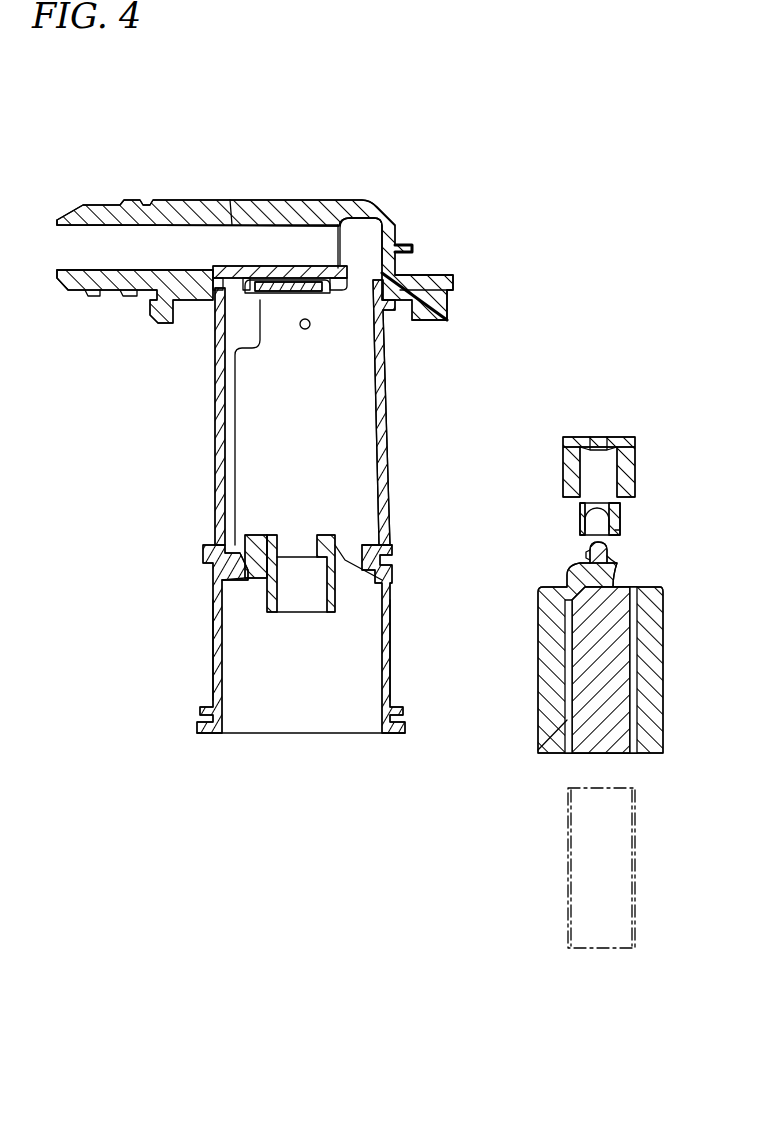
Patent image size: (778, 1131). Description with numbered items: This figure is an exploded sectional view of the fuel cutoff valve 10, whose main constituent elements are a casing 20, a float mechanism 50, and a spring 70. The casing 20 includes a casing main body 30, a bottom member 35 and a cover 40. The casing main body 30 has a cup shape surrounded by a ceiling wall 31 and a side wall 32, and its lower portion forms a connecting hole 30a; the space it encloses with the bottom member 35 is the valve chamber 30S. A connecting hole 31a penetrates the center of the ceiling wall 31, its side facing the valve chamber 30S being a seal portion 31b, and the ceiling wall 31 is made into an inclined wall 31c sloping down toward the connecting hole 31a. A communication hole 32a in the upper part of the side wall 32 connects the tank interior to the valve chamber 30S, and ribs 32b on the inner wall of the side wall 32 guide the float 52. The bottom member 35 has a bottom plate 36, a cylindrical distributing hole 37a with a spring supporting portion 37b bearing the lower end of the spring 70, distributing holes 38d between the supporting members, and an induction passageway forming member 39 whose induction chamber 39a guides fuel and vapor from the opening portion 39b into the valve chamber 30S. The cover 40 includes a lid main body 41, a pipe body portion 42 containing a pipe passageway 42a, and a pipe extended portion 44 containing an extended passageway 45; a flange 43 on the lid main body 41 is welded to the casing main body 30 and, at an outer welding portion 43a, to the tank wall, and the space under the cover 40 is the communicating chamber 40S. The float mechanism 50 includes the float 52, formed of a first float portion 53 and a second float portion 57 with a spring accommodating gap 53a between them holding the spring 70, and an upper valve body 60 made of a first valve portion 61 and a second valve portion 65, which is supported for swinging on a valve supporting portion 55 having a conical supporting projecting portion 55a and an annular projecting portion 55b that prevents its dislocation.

The fuel cutoff valve 10 is at (439, 209).
The casing 20 is at (137, 455).
The casing main body 30 is at (222, 493).
The valve chamber 30S is at (320, 401).
The connecting hole 30a is at (378, 533).
The ceiling wall 31 is at (207, 268).
The connecting hole 31a is at (284, 284).
The seal portion 31b is at (310, 284).
The inclined wall 31c is at (246, 270).
The side wall 32 is at (388, 480).
The communication hole 32a is at (310, 324).
The ribs 32b is at (238, 428).
The bottom member 35 is at (210, 662).
The bottom plate 36 is at (385, 560).
The distributing hole 37a is at (296, 553).
The spring supporting portion 37b is at (268, 532).
The distributing holes 38d is at (342, 560).
The induction passageway forming member 39 is at (390, 678).
The induction chamber 39a is at (326, 664).
The opening portion 39b is at (333, 733).
The cover 40 is at (170, 323).
The communicating chamber 40S is at (358, 232).
The lid main body 41 is at (408, 283).
The pipe body portion 42 is at (173, 200).
The pipe passageway 42a is at (130, 257).
The flange 43 is at (432, 290).
The outer welding portion 43a is at (445, 313).
The pipe extended portion 44 is at (348, 255).
The extended passageway 45 is at (232, 200).
The float mechanism 50 is at (657, 419).
The float 52 is at (703, 612).
The first float portion 53 is at (647, 632).
The spring accommodating gap 53a is at (545, 745).
The valve supporting portion 55 is at (607, 548).
The supporting projecting portion 55a is at (590, 553).
The annular projecting portion 55b is at (608, 560).
The second float portion 57 is at (662, 649).
The upper valve body 60 is at (683, 450).
The first valve portion 61 is at (628, 466).
The second valve portion 65 is at (617, 517).
The spring 70 is at (633, 865).